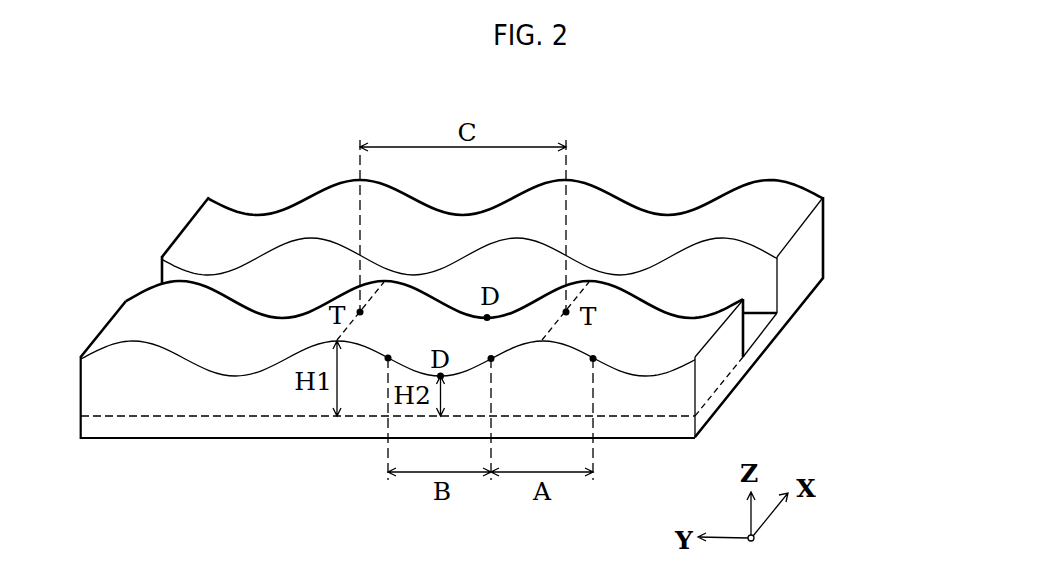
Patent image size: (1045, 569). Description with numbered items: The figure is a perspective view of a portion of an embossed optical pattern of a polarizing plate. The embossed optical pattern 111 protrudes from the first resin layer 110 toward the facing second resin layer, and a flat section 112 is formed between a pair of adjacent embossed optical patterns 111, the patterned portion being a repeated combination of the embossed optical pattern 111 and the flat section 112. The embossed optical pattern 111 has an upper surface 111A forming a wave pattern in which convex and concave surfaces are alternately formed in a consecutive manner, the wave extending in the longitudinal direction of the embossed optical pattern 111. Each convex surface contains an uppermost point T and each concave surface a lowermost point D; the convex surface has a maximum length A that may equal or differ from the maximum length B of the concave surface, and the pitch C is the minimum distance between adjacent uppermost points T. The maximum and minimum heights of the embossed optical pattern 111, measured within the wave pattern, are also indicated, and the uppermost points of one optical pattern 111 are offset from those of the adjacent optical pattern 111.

The first resin layer 110 is at (840, 198).
The embossed optical pattern 111 is at (708, 342).
The upper surface 111A is at (127, 316).
The flat section 112 is at (765, 328).